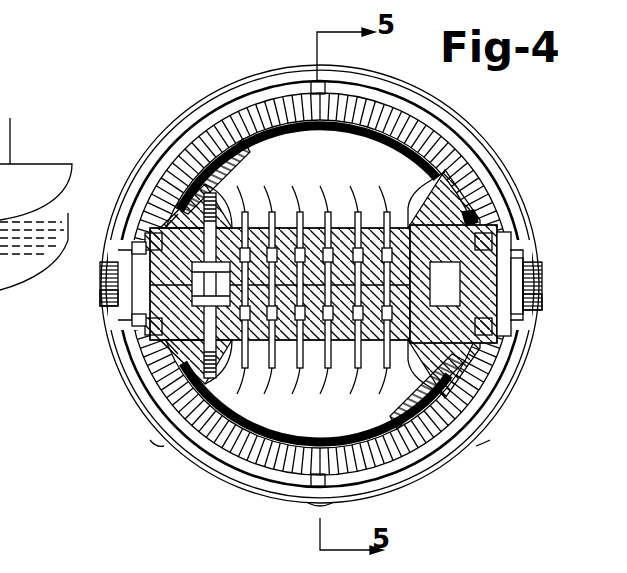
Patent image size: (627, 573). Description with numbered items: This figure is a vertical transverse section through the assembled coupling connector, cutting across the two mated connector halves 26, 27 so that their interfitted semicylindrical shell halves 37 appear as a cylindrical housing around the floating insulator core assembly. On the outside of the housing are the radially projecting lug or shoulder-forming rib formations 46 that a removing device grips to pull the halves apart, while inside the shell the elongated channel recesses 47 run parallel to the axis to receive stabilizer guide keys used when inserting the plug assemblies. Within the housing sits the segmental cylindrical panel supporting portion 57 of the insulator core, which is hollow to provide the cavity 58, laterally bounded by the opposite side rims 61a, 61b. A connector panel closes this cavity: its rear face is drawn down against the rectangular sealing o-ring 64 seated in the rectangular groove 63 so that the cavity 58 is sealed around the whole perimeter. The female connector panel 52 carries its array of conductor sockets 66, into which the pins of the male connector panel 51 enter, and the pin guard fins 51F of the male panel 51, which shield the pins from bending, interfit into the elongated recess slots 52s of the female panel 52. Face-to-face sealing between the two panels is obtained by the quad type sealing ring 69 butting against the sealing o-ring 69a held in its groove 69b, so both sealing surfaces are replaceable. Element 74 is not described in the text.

The connector half 26 is at (462, 152).
The connector half 27 is at (480, 418).
The half cylindrical hollow concave shell half 37 is at (495, 202).
The lug or shoulder-forming rib formations 46 is at (187, 137).
The elongated channel recesses 47 is at (142, 330).
The male connector panel 51 is at (262, 368).
The pin guard fins 51F is at (515, 252).
The female connector panel 52 is at (260, 214).
The elongated recess slots 52s is at (488, 178).
The segmental cylindrical panel supporting portion 57 is at (322, 154).
The cavity 58 is at (365, 166).
The side rim 61a is at (485, 378).
The side rim 61b is at (206, 178).
The rectangular groove or channel 63 is at (160, 226).
The rectangular sealing o-ring 64 is at (178, 202).
The conductor sockets 66 is at (378, 218).
The quad type sealing ring 69 is at (126, 252).
The sealing o-ring 69a is at (542, 303).
The groove 69b is at (112, 300).
The key 74 is at (478, 214).